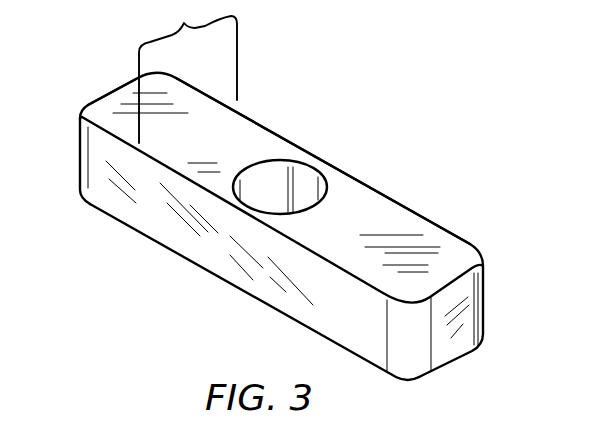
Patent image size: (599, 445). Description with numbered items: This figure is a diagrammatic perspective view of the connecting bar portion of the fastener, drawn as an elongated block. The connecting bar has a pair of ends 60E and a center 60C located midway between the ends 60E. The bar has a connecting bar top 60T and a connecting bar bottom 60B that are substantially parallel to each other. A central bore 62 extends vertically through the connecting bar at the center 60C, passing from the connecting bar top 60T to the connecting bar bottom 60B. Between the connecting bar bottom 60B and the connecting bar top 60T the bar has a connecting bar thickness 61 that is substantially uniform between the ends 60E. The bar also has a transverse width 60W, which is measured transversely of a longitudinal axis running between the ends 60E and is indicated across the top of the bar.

The connecting bar top 60T is at (373, 208).
The center 60C is at (328, 161).
The connecting bar thickness 61 is at (79, 150).
The connecting bar bottom 60B is at (171, 250).
The ends 60E is at (111, 86).
The central bore 62 is at (268, 158).
The transverse width 60W is at (188, 71).